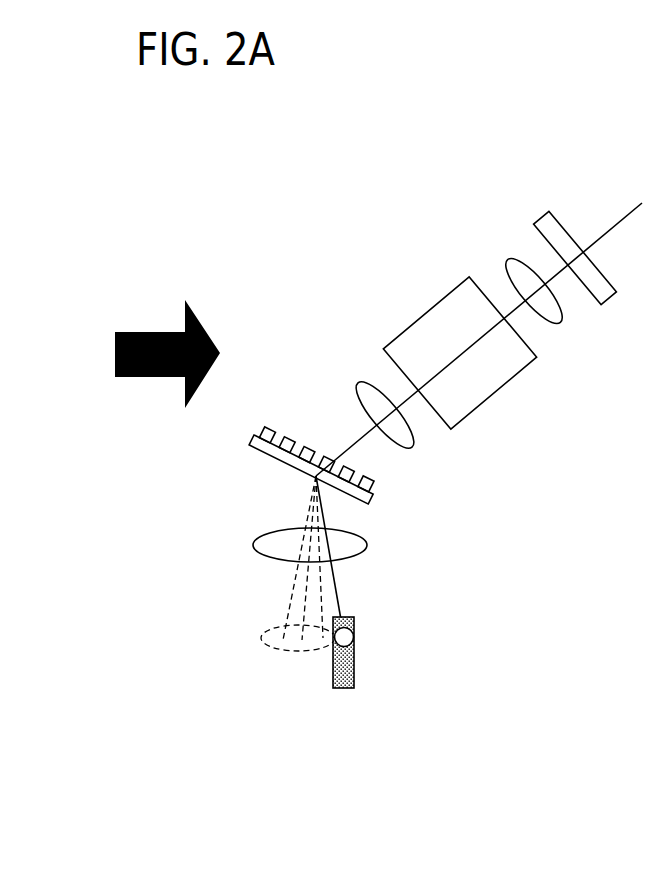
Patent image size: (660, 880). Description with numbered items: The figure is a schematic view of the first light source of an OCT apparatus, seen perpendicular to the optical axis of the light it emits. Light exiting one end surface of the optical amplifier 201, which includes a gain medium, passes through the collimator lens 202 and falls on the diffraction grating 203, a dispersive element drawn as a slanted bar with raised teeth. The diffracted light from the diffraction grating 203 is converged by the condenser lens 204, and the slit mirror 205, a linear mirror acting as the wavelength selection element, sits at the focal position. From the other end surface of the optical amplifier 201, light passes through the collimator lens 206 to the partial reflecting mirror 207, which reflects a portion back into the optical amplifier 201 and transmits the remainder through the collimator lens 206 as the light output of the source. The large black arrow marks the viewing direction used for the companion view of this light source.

The optical amplifier 201 is at (423, 312).
The collimator lens 202 is at (363, 382).
The diffraction grating 203 is at (373, 502).
The condenser lens 204 is at (255, 542).
The slit mirror 205 is at (355, 670).
The collimator lens 206 is at (513, 260).
The partial reflecting mirror 207 is at (548, 212).